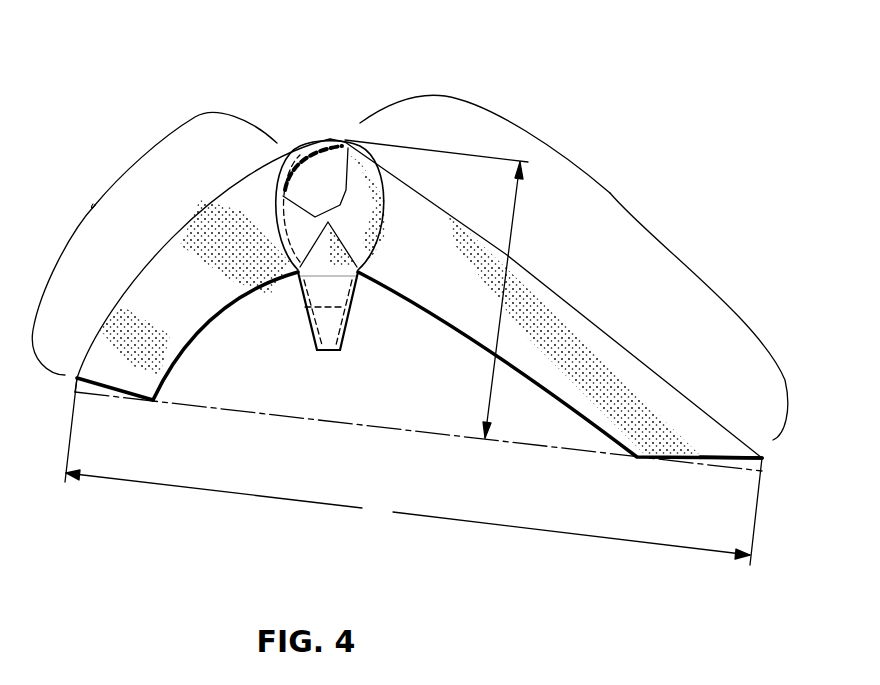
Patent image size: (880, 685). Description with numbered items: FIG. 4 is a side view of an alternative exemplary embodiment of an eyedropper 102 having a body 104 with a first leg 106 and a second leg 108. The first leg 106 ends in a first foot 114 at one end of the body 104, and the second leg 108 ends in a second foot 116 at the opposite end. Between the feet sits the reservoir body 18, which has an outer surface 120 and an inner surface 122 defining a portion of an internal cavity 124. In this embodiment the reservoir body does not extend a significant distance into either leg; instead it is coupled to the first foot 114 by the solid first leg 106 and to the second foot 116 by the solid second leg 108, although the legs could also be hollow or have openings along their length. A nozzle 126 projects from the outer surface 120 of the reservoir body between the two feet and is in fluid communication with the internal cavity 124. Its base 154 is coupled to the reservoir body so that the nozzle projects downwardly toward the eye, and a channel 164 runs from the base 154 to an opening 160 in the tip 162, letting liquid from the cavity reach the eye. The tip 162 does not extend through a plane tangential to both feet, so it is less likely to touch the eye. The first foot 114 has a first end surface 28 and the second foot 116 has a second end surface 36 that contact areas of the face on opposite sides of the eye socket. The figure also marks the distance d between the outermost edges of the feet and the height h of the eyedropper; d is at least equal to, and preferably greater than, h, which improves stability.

The eyedropper 102 is at (263, 67).
The body 104 is at (233, 185).
The first leg 106 is at (574, 267).
The second leg 108 is at (154, 243).
The first foot 114 is at (720, 454).
The second foot 116 is at (113, 386).
The reservoir body 18 is at (387, 212).
The outer surface 120 is at (553, 300).
The inner surface 122 is at (322, 157).
The internal cavity 124 is at (300, 198).
The nozzle 126 is at (345, 332).
The base of the nozzle 154 is at (294, 278).
The opening 160 is at (330, 356).
The tip of the nozzle 162 is at (307, 335).
The channel 164 is at (348, 309).
The first end surface 28 is at (677, 463).
The second end surface 36 is at (125, 396).